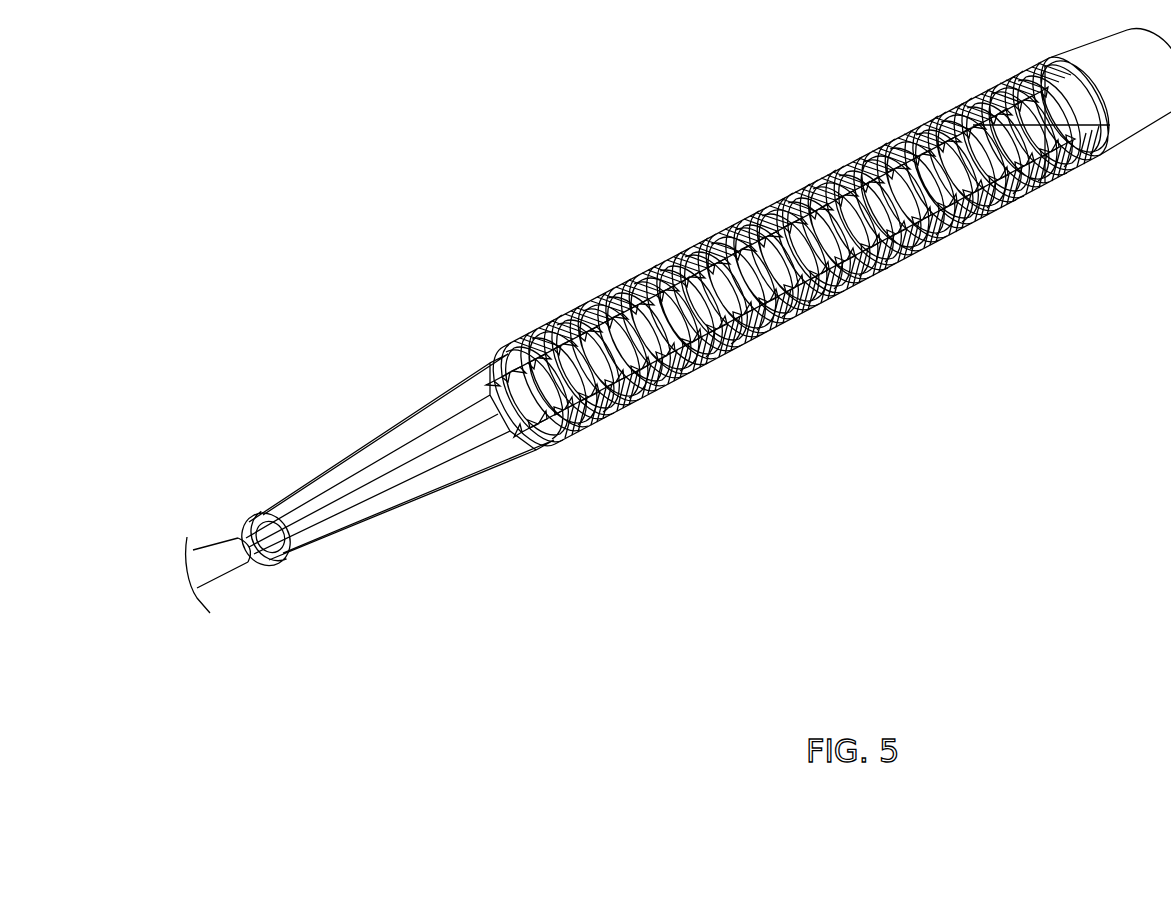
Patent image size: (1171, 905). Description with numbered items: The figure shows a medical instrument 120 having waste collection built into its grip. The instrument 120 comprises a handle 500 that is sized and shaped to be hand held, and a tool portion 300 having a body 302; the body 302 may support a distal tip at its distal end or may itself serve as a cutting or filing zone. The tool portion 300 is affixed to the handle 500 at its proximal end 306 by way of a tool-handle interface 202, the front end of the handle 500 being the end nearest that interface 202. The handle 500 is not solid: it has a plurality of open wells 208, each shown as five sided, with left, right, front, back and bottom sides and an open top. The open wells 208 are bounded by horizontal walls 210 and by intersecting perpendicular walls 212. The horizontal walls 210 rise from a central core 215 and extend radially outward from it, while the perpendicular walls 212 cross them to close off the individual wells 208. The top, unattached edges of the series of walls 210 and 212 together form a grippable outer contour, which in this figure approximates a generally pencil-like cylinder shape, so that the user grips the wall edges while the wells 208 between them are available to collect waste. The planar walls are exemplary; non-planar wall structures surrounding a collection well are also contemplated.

The medical instrument 120 is at (373, 256).
The handle 500 is at (660, 172).
The open wells 208 is at (840, 163).
The perpendicular walls 212 is at (922, 187).
The horizontal walls 210 is at (842, 293).
The central core 215 is at (450, 447).
The tool portion 300 is at (216, 522).
The body 302 is at (218, 575).
The tool-handle interface 202 is at (281, 548).
The proximal end 306 is at (256, 567).